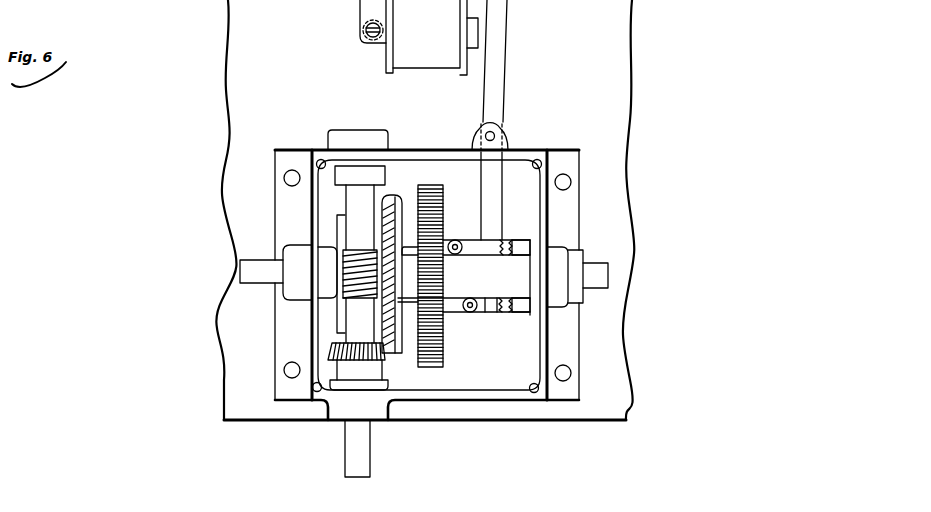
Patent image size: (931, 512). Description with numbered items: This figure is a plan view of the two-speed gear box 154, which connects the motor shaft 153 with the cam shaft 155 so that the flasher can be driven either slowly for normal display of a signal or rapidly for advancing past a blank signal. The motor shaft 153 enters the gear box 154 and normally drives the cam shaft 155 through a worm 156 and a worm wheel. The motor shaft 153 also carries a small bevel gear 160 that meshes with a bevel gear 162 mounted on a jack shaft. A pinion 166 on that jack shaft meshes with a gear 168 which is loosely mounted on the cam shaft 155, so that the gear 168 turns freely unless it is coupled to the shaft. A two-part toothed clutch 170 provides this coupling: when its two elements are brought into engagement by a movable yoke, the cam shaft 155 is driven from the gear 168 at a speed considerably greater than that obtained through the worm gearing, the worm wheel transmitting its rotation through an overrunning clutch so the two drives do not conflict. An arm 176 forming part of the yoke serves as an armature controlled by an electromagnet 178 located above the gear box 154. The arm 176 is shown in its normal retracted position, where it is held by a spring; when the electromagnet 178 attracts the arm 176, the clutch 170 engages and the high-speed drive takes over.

The motor shaft 153 is at (353, 452).
The two-speed gear box 154 is at (496, 400).
The cam shaft 155 is at (603, 277).
The worm 156 is at (358, 255).
The small bevel gear 160 is at (377, 357).
The bevel gear 162 is at (394, 199).
The pinion 166 is at (436, 282).
The gear 168 is at (436, 343).
The two-part toothed clutch 170 is at (503, 240).
The arm 176 is at (497, 87).
The electromagnet 178 is at (400, 57).